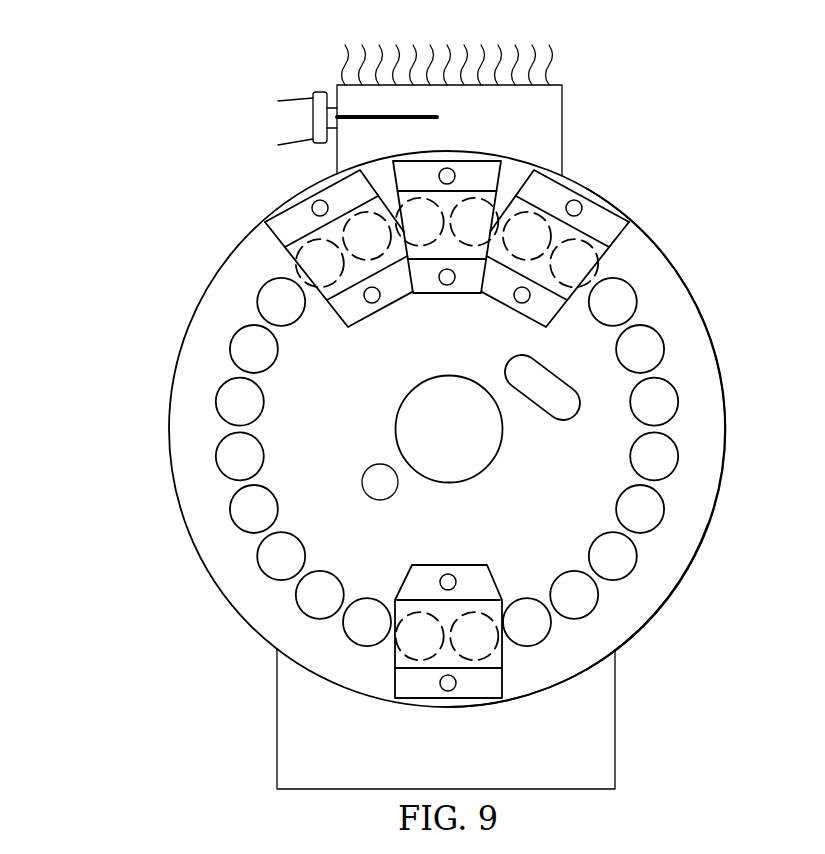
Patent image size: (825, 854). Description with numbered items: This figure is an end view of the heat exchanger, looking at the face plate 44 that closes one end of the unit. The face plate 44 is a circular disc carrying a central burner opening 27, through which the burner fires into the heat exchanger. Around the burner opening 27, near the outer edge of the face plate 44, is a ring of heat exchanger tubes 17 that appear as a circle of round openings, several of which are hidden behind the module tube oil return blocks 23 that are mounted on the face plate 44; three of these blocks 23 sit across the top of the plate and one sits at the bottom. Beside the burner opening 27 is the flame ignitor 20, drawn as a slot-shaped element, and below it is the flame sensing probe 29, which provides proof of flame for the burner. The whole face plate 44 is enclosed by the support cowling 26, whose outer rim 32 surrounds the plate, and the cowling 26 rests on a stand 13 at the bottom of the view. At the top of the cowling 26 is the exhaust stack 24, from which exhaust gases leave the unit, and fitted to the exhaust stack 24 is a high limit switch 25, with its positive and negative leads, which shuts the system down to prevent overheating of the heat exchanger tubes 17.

The stand 13 is at (615, 752).
The heat exchanger tubes 17 is at (677, 455).
The flame ignitor 20 is at (580, 400).
The module tube oil return blocks 23 is at (628, 236).
The exhaust stack 24 is at (562, 114).
The high limit switch 25 is at (317, 90).
The cowling 26 is at (239, 613).
The burner opening 27 is at (395, 419).
The flame sensing probe 29 is at (363, 493).
The housing wall 32 is at (701, 543).
The face plate 44 is at (527, 513).